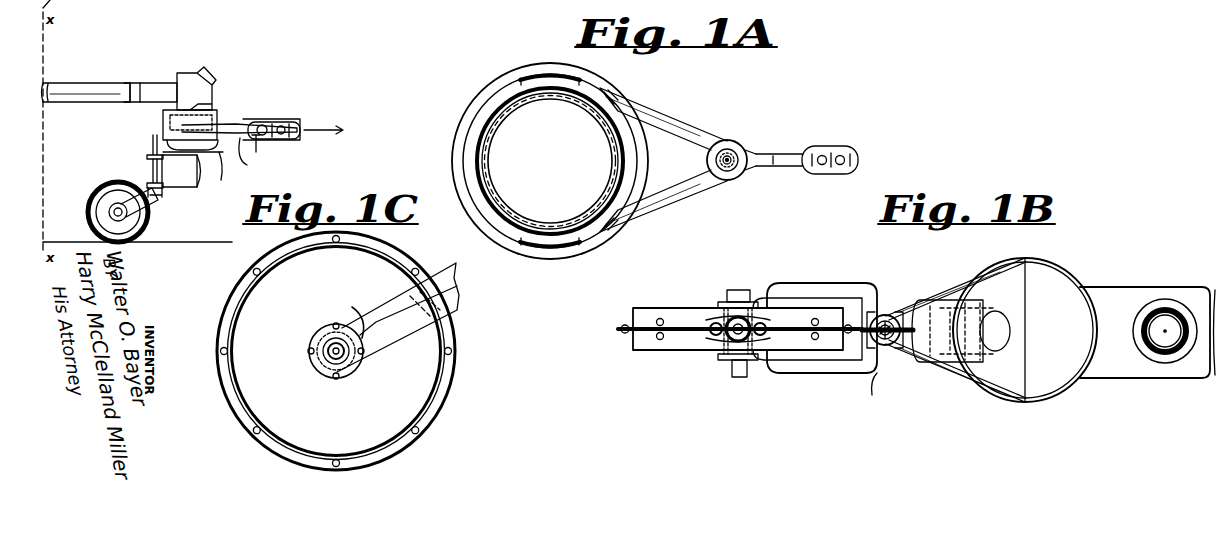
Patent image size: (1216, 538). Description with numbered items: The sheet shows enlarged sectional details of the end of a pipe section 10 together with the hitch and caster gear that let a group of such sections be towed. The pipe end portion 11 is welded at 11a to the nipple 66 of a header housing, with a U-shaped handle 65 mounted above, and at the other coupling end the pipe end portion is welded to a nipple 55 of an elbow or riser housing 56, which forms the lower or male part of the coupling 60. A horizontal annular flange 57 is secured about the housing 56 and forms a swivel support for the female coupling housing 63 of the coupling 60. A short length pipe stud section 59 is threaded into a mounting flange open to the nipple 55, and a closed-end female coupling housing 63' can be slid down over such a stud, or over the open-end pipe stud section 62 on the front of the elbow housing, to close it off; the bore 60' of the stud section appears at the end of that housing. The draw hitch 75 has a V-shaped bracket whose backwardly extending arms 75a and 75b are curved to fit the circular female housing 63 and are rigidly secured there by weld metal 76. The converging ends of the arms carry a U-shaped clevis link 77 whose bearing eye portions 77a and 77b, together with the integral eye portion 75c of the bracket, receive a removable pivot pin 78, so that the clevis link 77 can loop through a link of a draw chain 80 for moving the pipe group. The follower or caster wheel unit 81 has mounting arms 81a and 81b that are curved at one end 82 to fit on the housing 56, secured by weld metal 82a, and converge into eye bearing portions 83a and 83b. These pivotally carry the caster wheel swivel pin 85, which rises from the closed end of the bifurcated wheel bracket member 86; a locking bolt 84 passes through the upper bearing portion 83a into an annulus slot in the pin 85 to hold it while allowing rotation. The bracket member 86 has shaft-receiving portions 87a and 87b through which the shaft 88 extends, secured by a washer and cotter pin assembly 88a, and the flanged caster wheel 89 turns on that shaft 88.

In FIG. 1A, the pipe section 10 is at (88, 82).
In FIG. 1A, the pipe end portion 11 is at (55, 97).
In FIG. 1A, the weld 11a is at (132, 82).
In FIG. 1B, the nipple 55 is at (1140, 286).
In FIG. 1A, the elbow or riser housing 56 is at (488, 138).
In FIG. 1B, the elbow or riser housing 56 is at (1070, 290).
In FIG. 1A, the horizontal annular flange 57 is at (222, 178).
In FIG. 1B, the short length pipe stud section 59 is at (1178, 306).
In FIG. 1A, the coupling 60 is at (531, 161).
In FIG. 1B, the bore 60' is at (1155, 362).
In FIG. 1B, the open-end pipe stud section 62 is at (982, 358).
In FIG. 1A, the female coupling housing 63 is at (393, 143).
In FIG. 1B, the female coupling housing 63' is at (947, 356).
In FIG. 1A, the handle 65 is at (207, 77).
In FIG. 1A, the nipple 66 is at (157, 83).
In FIG. 1A, the draw hitch 75 is at (233, 124).
In FIG. 1A, the arm 75a is at (667, 214).
In FIG. 1A, the arm 75b is at (668, 112).
In FIG. 1A, the eye portion 75c is at (748, 180).
In FIG. 1A, the weld metal 76 is at (538, 76).
In FIG. 1A, the clevis link 77 is at (785, 140).
In FIG. 1A, the bearing eye portion 77a is at (266, 119).
In FIG. 1A, the bearing eye portion 77b is at (249, 158).
In FIG. 1A, the pivot pin 78 is at (280, 119).
In FIG. 1A, the draw chain 80 is at (342, 119).
In FIG. 1A, the caster wheel unit 81 is at (170, 178).
In FIG. 1B, the caster wheel unit 81 is at (922, 358).
In FIG. 1B, the mounting arm 81a is at (977, 396).
In FIG. 1B, the mounting arm 81b is at (957, 278).
In FIG. 1B, the curved end 82 is at (1024, 260).
In FIG. 1B, the weld metal 82a is at (1032, 261).
In FIG. 1A, the eye bearing portion 83a is at (152, 172).
In FIG. 1B, the eye bearing portion 83a is at (876, 396).
In FIG. 1A, the eye bearing portion 83b is at (158, 197).
In FIG. 1B, the locking bolt 84 is at (880, 316).
In FIG. 1A, the caster wheel swivel pin 85 is at (148, 140).
In FIG. 1B, the caster wheel swivel pin 85 is at (892, 318).
In FIG. 1A, the wheel bracket member 86 is at (124, 200).
In FIG. 1B, the wheel bracket member 86 is at (833, 283).
In FIG. 1C, the wheel bracket member 86 is at (435, 270).
In FIG. 1B, the shaft-receiving portion 87a is at (718, 357).
In FIG. 1C, the shaft-receiving portion 87a is at (350, 368).
In FIG. 1B, the shaft-receiving portion 87b is at (720, 304).
In FIG. 1B, the shaft 88 is at (748, 366).
In FIG. 1C, the shaft 88 is at (328, 356).
In FIG. 1B, the washer and cotter pin assembly 88a is at (730, 366).
In FIG. 1C, the washer and cotter pin assembly 88a is at (344, 330).
In FIG. 1A, the flanged caster wheel 89 is at (88, 196).
In FIG. 1B, the flanged caster wheel 89 is at (651, 307).
In FIG. 1C, the flanged caster wheel 89 is at (448, 368).